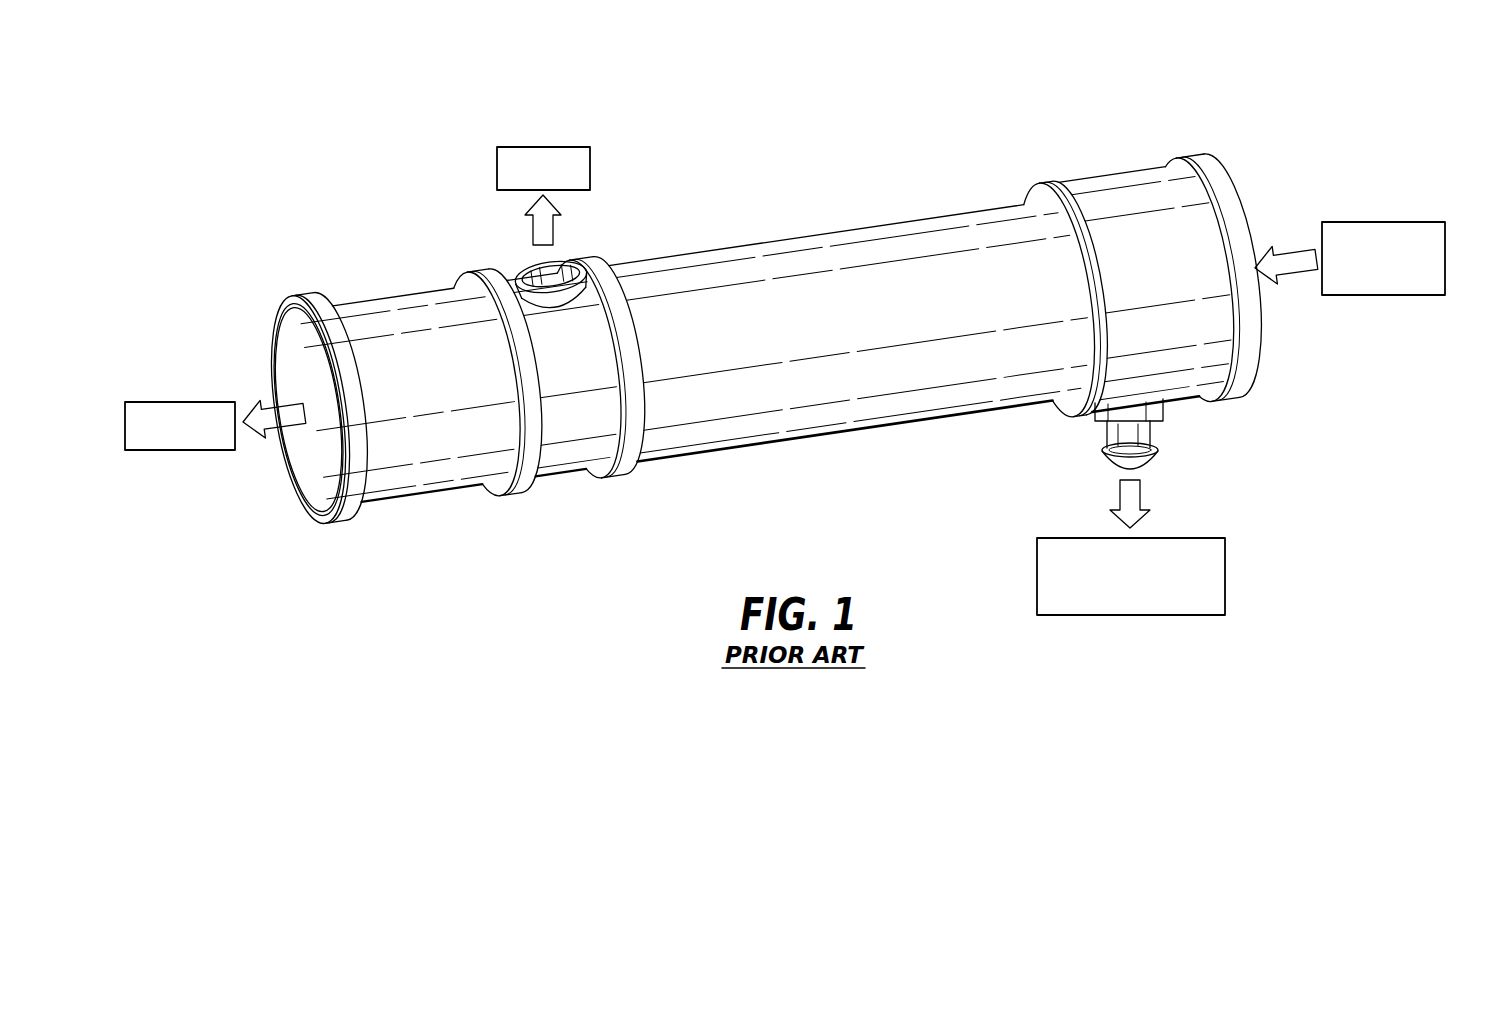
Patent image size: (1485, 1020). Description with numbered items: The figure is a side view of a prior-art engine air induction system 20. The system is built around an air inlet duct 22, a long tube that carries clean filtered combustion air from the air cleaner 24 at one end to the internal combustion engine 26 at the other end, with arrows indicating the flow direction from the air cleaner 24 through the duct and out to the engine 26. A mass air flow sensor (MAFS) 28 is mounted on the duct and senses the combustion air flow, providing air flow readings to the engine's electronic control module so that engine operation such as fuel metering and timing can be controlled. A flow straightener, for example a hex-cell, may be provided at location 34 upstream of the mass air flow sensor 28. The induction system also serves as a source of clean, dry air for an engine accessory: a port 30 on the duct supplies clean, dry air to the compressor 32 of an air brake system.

The engine air induction system 20 is at (306, 230).
The air inlet duct 22 is at (815, 237).
The air cleaner 24 is at (1385, 222).
The internal combustion engine 26 is at (180, 402).
The mass air flow sensor (MAFS) 28 is at (548, 147).
The port 30 is at (1100, 462).
The compressor 32 is at (1037, 578).
The flow straightener 34 is at (598, 264).